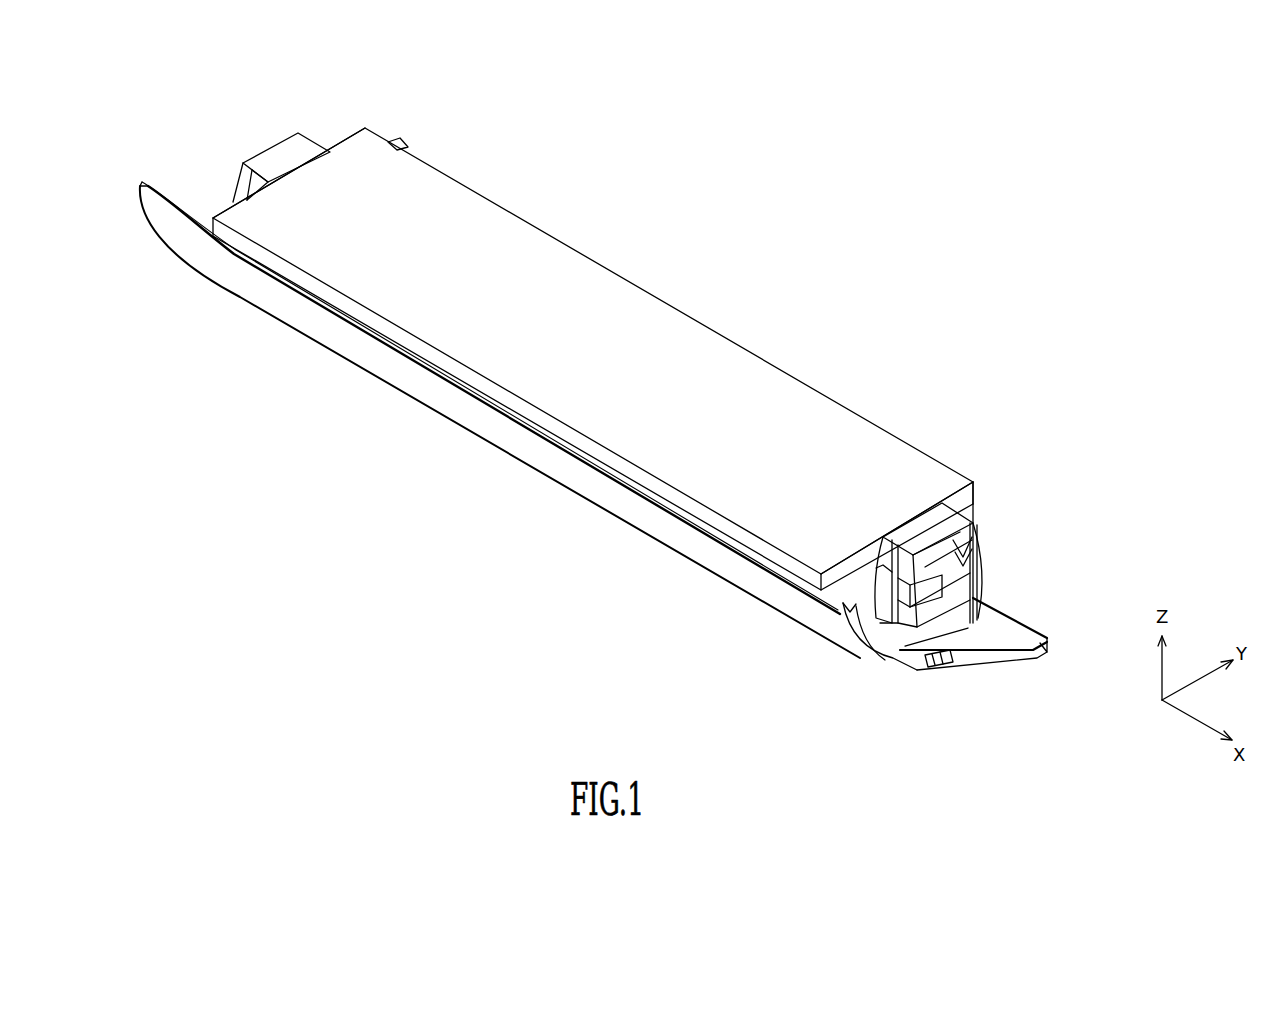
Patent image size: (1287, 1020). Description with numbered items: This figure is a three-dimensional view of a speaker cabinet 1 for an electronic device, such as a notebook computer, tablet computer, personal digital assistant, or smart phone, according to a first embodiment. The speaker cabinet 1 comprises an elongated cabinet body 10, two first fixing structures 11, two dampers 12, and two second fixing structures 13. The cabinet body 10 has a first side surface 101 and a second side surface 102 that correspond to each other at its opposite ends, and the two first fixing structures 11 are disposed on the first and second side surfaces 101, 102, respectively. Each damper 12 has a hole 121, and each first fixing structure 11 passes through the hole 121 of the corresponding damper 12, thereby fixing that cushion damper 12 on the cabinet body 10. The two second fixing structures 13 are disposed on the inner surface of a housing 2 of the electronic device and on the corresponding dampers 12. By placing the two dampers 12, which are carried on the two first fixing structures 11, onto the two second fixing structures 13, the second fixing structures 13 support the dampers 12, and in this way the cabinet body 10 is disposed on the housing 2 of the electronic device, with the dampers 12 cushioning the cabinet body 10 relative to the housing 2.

The speaker cabinet 1 is at (705, 278).
The housing 2 is at (550, 480).
The cabinet body 10 is at (783, 368).
The first side surface 101 is at (973, 480).
The second side surface 102 is at (343, 141).
The first fixing structure 11 is at (978, 578).
The damper 12 is at (963, 492).
The hole 121 is at (265, 147).
The second fixing structure 13 is at (937, 637).